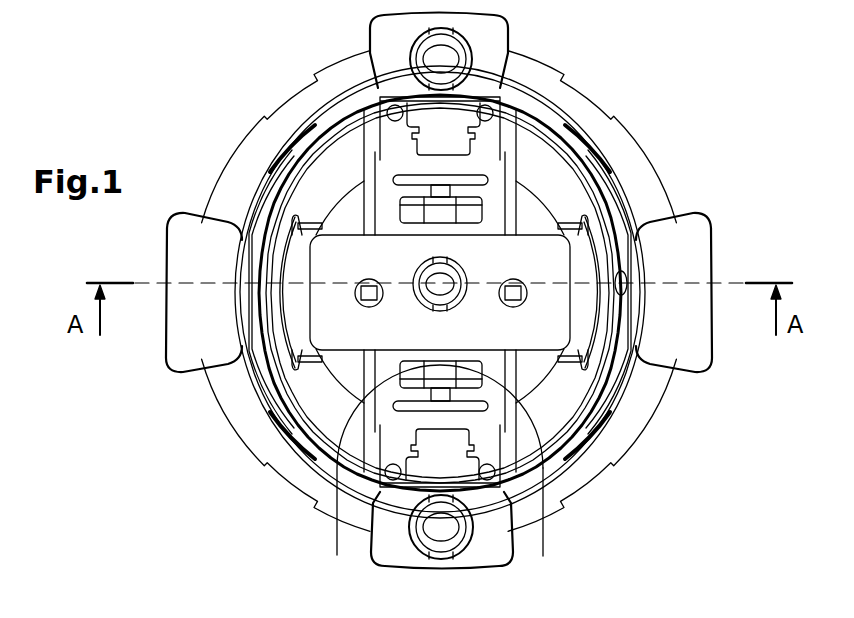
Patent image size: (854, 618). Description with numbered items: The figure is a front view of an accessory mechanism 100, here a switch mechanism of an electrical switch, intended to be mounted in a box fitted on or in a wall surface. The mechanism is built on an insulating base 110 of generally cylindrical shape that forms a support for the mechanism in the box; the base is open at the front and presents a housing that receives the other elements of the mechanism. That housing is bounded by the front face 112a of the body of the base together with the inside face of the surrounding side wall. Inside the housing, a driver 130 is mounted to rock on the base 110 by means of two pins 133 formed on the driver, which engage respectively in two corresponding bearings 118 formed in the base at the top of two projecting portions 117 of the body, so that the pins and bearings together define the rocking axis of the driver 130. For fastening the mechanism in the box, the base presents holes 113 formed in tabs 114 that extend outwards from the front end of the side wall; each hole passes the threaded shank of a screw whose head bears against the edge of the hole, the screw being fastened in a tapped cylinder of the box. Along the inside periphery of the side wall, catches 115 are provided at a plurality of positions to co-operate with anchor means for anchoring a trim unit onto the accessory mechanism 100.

The accessory mechanism 100 is at (271, 99).
The insulating base 110 is at (249, 452).
The front face 112a is at (556, 173).
The holes 113 is at (437, 59).
The tabs 114 is at (507, 33).
The catches 115 is at (268, 153).
The projecting portions 117 is at (346, 463).
The bearings 118 is at (545, 550).
The driver 130 is at (540, 213).
The pins 133 is at (336, 553).